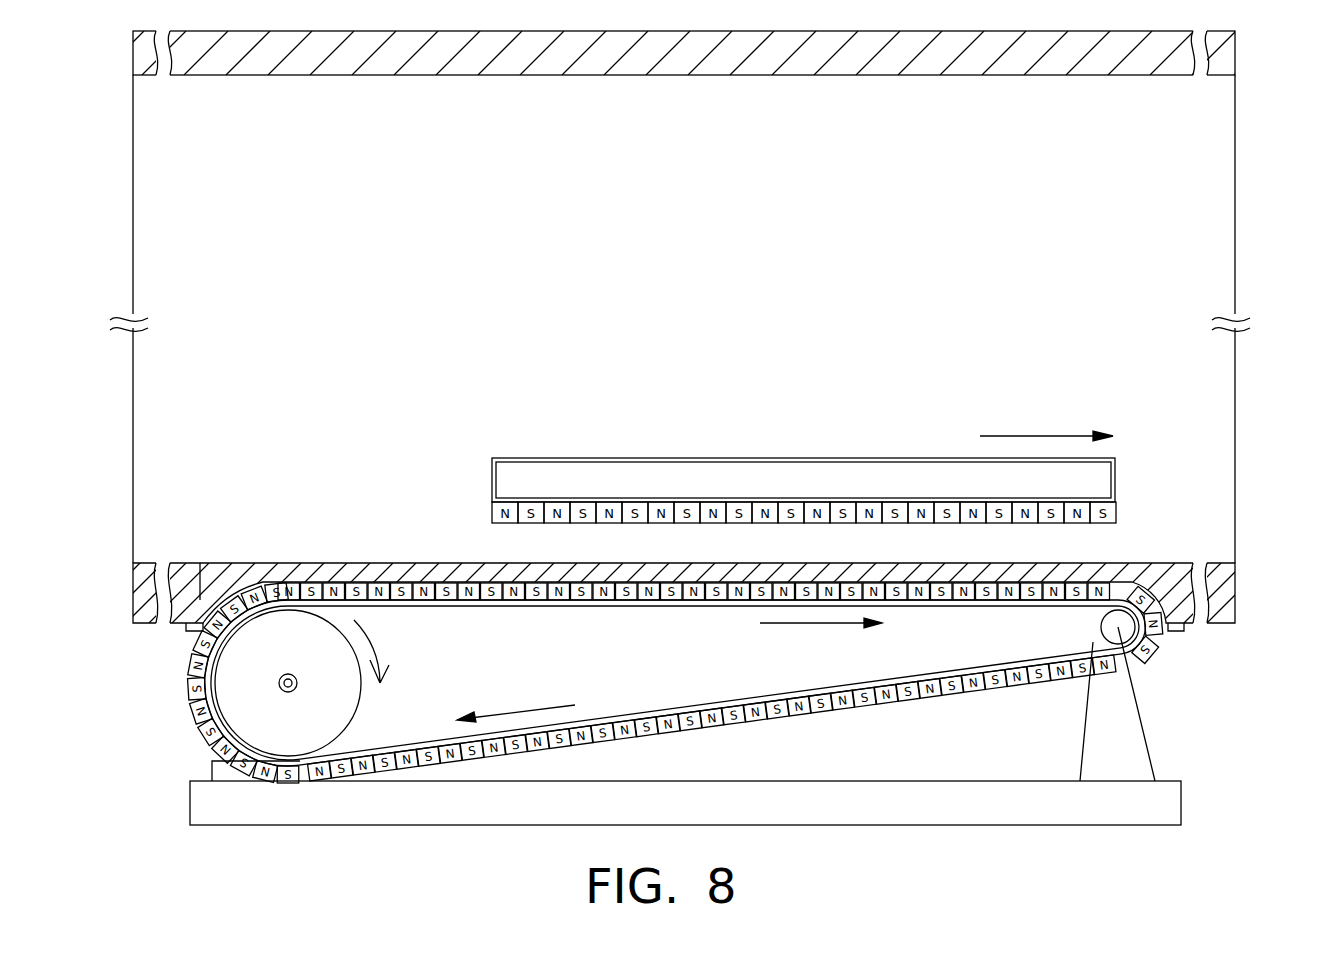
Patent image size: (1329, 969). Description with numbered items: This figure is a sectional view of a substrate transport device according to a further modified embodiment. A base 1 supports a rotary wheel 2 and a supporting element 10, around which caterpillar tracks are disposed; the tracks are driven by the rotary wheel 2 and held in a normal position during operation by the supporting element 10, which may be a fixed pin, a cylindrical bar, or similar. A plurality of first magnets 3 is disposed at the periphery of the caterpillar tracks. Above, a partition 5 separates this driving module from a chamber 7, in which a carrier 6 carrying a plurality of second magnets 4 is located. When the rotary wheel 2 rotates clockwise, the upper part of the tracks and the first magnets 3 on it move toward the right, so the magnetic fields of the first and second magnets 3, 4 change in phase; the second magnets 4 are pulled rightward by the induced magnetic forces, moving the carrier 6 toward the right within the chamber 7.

The base 1 is at (203, 800).
The rotary wheel 2 is at (243, 716).
The first magnets 3 is at (192, 677).
The second magnets 4 is at (494, 512).
The partition 5 is at (210, 595).
The carrier 6 is at (778, 480).
The chamber 7 is at (177, 139).
The supporting element 10 is at (1150, 655).